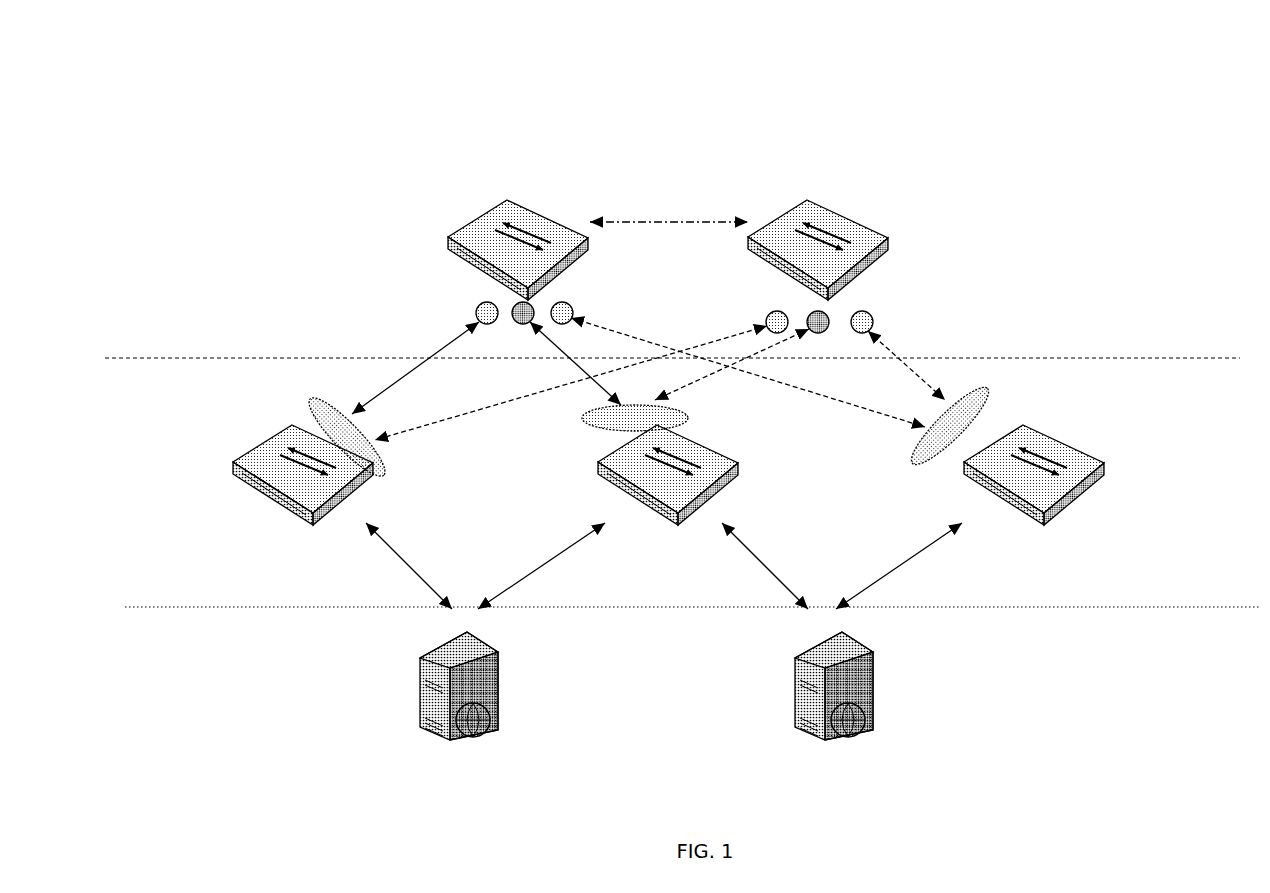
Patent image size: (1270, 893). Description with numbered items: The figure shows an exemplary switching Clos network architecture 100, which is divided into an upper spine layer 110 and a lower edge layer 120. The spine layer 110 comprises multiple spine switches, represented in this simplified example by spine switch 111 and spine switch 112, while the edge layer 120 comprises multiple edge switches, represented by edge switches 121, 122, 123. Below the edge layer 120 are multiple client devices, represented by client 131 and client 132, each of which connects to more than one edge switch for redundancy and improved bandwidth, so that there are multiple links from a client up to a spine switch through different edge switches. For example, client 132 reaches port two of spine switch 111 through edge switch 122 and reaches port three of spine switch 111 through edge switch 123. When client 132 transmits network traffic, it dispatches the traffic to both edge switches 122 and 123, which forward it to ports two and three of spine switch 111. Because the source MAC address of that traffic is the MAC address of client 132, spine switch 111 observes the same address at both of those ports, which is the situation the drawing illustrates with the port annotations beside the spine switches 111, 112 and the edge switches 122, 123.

The switching Clos network architecture 100 is at (406, 90).
The spine layer 110 is at (238, 240).
The edge layer 120 is at (220, 512).
The spine switch 111 is at (498, 188).
The spine switch 112 is at (785, 188).
The edge switch 121 is at (321, 587).
The edge switch 122 is at (687, 587).
The edge switch 123 is at (1052, 587).
The client 131 is at (476, 803).
The client 132 is at (852, 803).